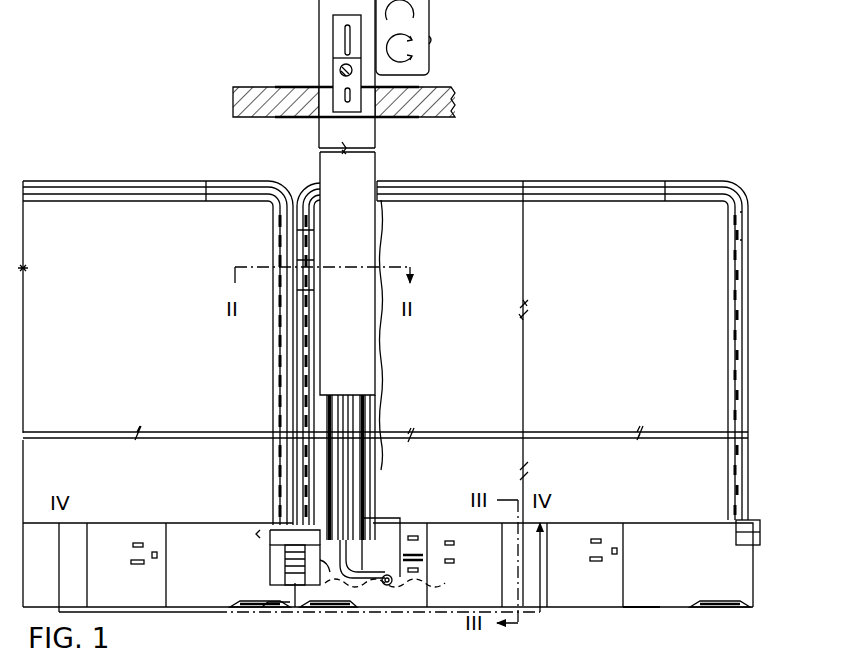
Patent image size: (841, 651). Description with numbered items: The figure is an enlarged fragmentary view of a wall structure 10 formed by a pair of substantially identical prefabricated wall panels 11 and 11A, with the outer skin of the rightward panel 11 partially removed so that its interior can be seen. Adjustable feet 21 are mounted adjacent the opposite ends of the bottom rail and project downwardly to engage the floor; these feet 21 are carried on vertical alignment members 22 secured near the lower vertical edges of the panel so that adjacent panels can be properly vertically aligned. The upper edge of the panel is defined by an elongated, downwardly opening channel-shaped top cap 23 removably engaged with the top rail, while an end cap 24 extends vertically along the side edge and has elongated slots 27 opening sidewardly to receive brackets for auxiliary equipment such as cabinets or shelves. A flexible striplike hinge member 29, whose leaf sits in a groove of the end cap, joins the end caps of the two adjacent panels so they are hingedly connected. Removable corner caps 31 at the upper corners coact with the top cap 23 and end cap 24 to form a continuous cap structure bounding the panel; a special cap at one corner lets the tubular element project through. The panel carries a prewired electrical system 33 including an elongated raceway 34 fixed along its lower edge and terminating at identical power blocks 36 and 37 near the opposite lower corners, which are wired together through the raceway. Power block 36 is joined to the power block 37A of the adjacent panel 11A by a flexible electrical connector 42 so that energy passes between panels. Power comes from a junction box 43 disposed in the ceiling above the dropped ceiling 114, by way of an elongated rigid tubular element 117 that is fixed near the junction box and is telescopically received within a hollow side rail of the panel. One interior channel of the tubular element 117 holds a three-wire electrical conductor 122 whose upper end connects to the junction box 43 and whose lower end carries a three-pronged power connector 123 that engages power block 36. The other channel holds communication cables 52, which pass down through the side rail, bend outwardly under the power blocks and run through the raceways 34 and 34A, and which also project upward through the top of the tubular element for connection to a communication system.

The wall structure 10 is at (586, 74).
The wall panel 11 is at (709, 174).
The wall panel 11A is at (139, 177).
The adjustable feet 21 is at (325, 610).
The vertical alignment members 22 is at (275, 532).
The top cap 23 is at (458, 185).
The end cap 24 is at (745, 362).
The elongated slots 27 is at (742, 290).
The hinge member 29 is at (292, 240).
The corner cap 31 is at (740, 186).
The prewired electrical system 33 is at (633, 609).
The raceway 34 is at (548, 532).
The raceway 34A is at (42, 537).
The power block 36 is at (445, 530).
The power block 37 is at (612, 532).
The power block 37A is at (135, 535).
The flexible electrical connector 42 is at (212, 609).
The junction box 43 is at (418, 10).
The communication cables 52 is at (340, 405).
The dropped ceiling 114 is at (266, 96).
The tubular element 117 is at (378, 230).
The electrical conductor 122 is at (365, 420).
The power connector 123 is at (388, 540).